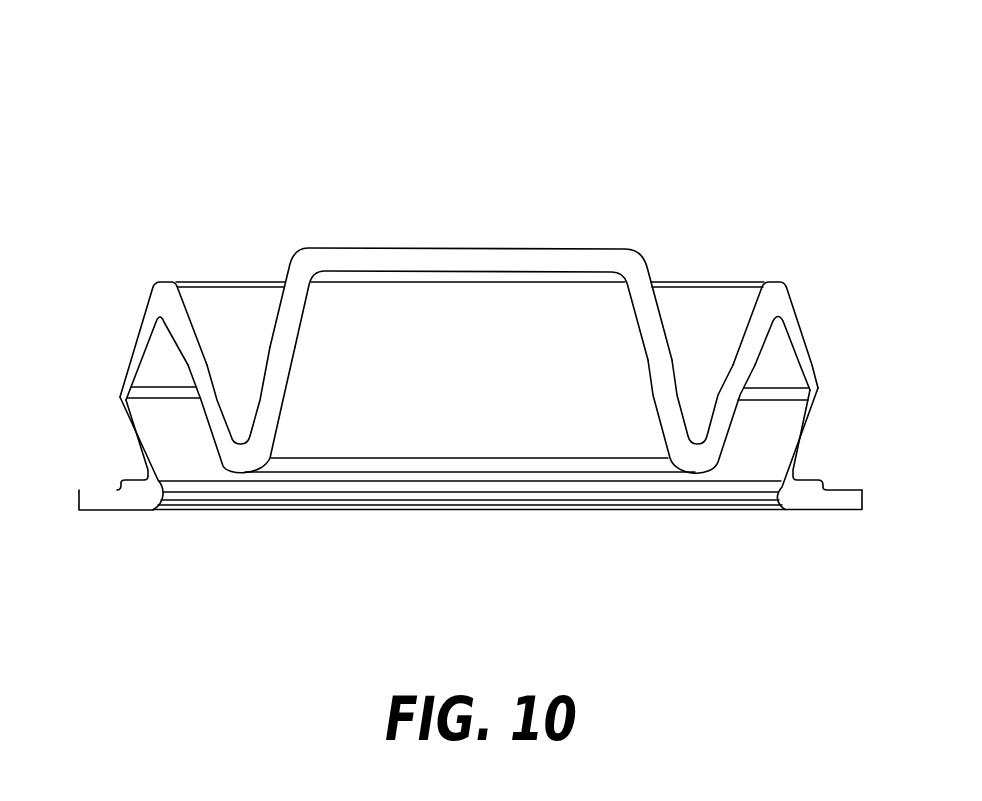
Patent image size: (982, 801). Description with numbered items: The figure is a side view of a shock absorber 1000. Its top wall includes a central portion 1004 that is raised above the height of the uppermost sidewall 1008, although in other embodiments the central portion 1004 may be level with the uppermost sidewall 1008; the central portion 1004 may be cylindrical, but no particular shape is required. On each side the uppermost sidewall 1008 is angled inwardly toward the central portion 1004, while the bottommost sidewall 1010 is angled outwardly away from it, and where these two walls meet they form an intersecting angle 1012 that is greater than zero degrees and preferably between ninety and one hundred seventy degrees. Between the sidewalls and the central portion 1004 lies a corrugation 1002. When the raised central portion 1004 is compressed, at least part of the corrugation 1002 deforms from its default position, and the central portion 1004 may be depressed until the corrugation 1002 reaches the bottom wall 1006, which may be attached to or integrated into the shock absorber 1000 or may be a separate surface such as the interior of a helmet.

The shock absorber 1000 is at (305, 77).
The corrugation 1002 is at (246, 459).
The central portion 1004 is at (438, 248).
The bottom wall 1006 is at (485, 510).
The uppermost sidewall 1008 is at (157, 302).
The bottommost sidewall 1010 is at (149, 460).
The intersecting angle 1012 is at (137, 337).